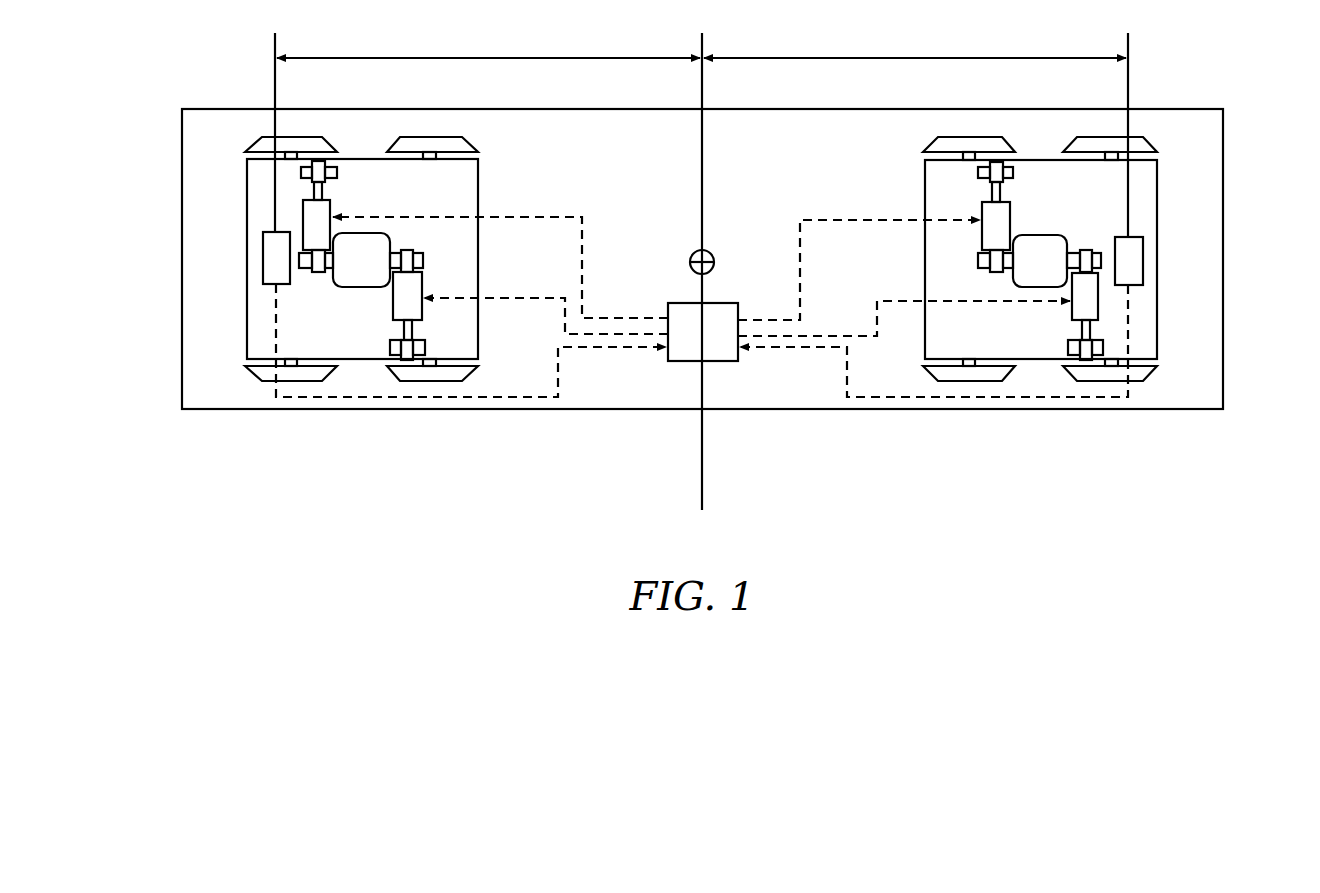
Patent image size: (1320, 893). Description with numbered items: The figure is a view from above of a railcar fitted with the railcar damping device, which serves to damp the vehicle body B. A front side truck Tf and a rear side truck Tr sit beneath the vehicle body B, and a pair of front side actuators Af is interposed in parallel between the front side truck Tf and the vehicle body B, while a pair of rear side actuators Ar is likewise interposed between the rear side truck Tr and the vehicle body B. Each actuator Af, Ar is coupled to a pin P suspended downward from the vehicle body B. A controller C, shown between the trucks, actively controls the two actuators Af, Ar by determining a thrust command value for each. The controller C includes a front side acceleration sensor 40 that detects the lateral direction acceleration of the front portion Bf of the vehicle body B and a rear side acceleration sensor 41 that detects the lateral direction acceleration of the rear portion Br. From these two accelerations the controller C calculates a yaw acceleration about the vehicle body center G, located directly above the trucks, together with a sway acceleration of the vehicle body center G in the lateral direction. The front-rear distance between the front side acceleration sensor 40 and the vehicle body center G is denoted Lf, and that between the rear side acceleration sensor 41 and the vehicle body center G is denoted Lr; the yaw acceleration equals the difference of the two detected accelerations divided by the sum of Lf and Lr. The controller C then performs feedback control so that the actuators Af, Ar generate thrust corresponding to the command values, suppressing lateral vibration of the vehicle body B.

The vehicle body B is at (225, 109).
The front portion of the vehicle body Bf is at (252, 398).
The rear portion of the vehicle body Br is at (1147, 400).
The vehicle body center G is at (712, 254).
The front-rear direction distance between the front side acceleration sensor and the Lf is at (487, 130).
The front-rear direction distance between the rear side acceleration sensor and the Lr is at (916, 132).
The front side truck Tf is at (255, 322).
The rear side truck Tr is at (1152, 205).
The front side actuator Af is at (330, 210).
The rear side actuator Ar is at (1008, 213).
The pin P is at (355, 285).
The front side acceleration sensor 40 is at (262, 255).
The rear side acceleration sensor 41 is at (1138, 262).
The controller C is at (667, 363).